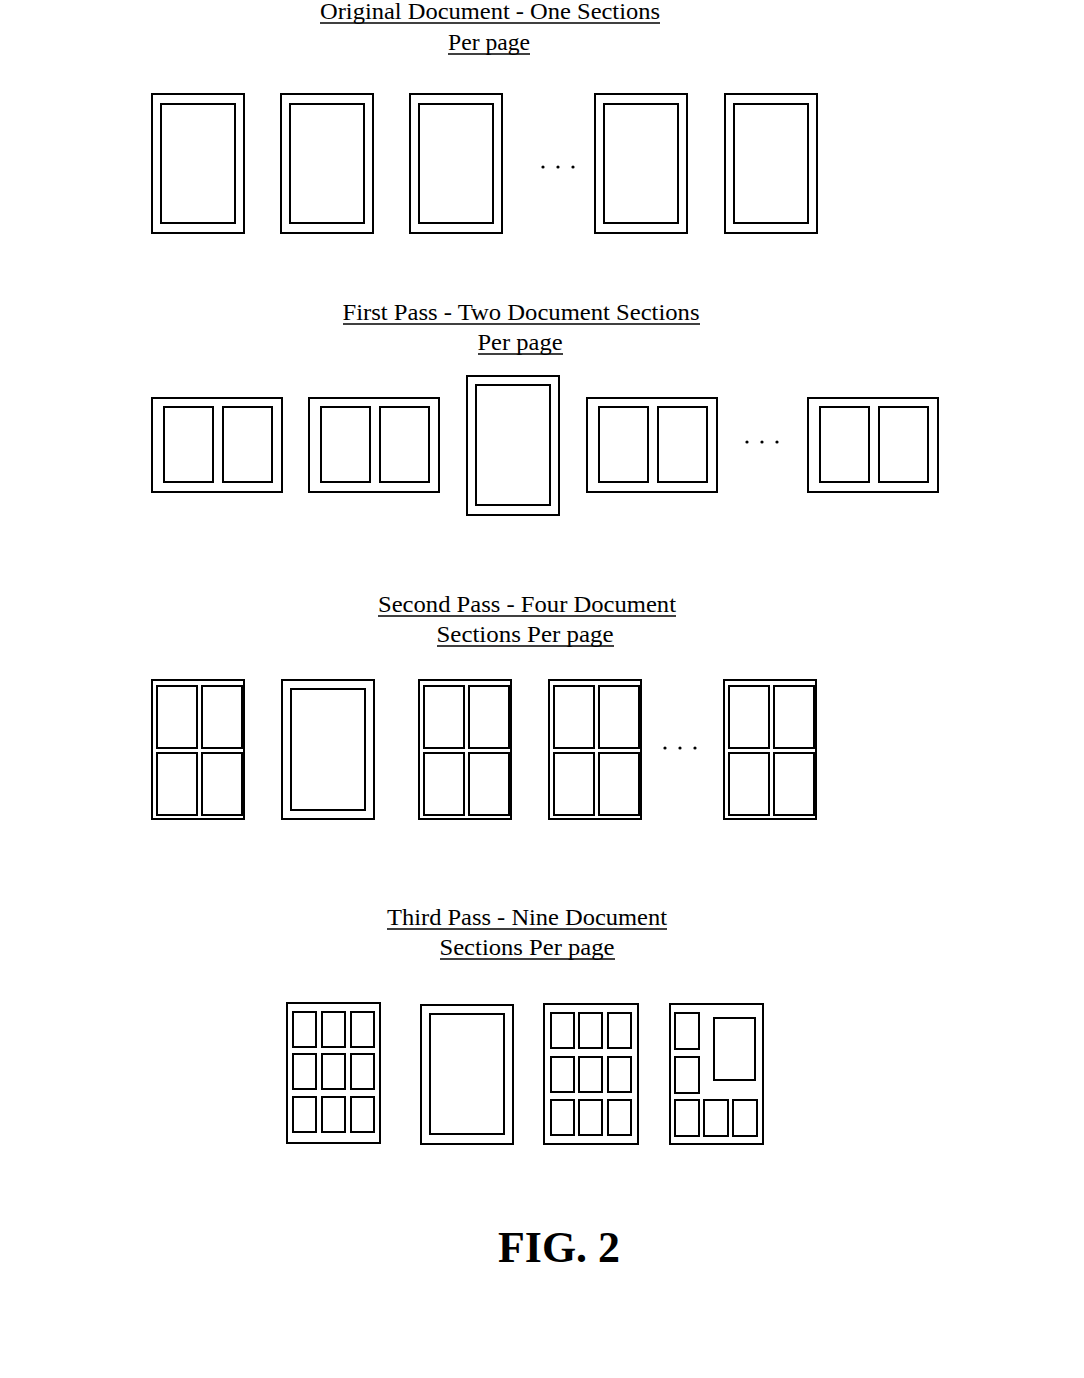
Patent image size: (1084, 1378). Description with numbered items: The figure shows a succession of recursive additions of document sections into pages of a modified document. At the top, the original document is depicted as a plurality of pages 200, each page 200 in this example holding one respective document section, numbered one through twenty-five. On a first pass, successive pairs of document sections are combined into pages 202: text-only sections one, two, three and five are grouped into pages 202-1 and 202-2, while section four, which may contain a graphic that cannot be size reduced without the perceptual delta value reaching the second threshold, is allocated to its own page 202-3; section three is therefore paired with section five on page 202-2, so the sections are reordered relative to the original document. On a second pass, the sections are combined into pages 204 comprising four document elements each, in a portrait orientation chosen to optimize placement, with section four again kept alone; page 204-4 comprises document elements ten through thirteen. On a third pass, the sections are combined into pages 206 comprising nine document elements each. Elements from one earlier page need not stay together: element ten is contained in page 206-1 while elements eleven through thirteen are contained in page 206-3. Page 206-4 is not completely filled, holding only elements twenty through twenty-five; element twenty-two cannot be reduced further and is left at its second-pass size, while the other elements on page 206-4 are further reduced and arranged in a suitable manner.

The page 200 is at (108, 162).
The page 202 is at (120, 446).
The page 202-1 is at (227, 492).
The page 202-2 is at (374, 492).
The page 202-3 is at (511, 515).
The page 204 is at (108, 758).
The page 204-4 is at (594, 819).
The page 206 is at (230, 1078).
The page 206-1 is at (336, 1143).
The page 206-3 is at (596, 1144).
The page 206-4 is at (720, 1144).